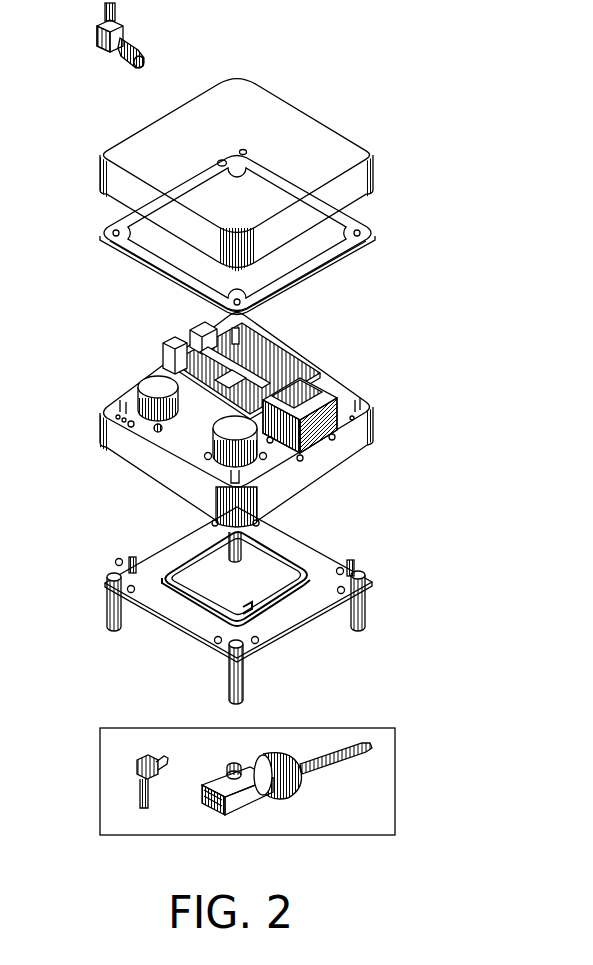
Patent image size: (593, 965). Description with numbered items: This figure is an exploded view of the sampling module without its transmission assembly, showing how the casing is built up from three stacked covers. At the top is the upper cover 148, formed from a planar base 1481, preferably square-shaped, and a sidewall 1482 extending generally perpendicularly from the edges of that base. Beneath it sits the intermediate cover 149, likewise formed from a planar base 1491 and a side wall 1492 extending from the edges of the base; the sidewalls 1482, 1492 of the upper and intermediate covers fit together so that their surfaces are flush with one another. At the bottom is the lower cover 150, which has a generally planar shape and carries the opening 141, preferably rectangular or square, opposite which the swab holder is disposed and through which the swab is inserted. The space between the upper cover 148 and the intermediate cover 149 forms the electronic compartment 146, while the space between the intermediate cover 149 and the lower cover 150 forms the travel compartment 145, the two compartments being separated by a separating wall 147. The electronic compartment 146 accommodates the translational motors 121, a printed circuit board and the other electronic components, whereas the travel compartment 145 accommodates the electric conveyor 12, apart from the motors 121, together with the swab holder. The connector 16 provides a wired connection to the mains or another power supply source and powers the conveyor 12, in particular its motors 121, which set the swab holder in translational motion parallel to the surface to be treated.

The electric conveyor 12 is at (238, 428).
The connector 16 is at (203, 323).
The motor 121 is at (157, 388).
The opening 141 is at (219, 576).
The travel compartment 145 is at (473, 482).
The electronic compartment 146 is at (475, 170).
The separating wall 147 is at (197, 462).
The upper cover 148 is at (240, 92).
The planar base 1481 is at (307, 127).
The sidewall 1482 is at (353, 183).
The intermediate cover 149 is at (340, 400).
The planar base 1491 is at (110, 428).
The side wall 1492 is at (348, 442).
The lower cover 150 is at (238, 607).